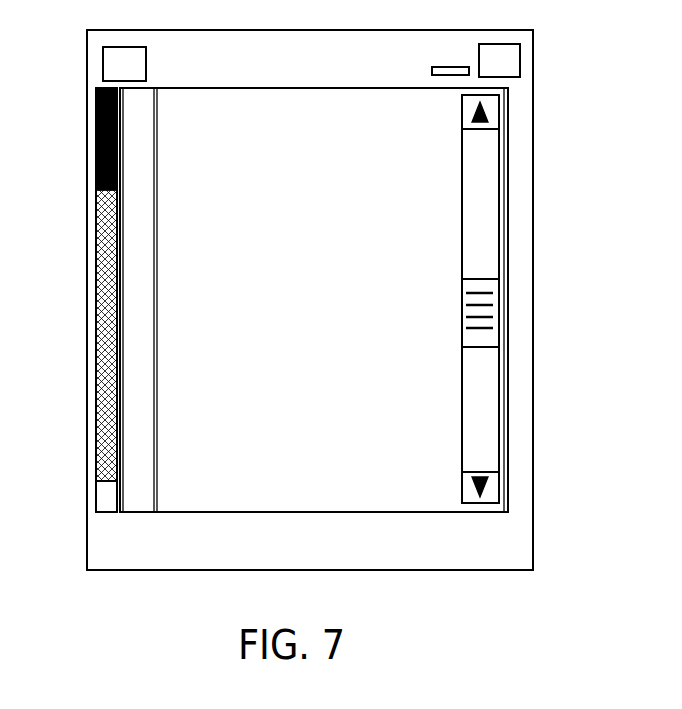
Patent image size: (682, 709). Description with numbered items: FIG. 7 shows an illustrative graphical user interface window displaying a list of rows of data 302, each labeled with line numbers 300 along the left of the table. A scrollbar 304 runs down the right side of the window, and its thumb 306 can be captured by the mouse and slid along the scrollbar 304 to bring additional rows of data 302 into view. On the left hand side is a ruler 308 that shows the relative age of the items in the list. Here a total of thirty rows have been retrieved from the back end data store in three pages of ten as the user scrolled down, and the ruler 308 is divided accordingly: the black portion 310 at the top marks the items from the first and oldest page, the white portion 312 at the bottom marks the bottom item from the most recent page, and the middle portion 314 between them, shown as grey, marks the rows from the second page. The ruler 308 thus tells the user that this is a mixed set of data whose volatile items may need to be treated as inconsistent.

The line numbers 300 is at (122, 387).
The rows of data 302 is at (198, 495).
The scrollbar 304 is at (498, 212).
The thumb 306 is at (490, 338).
The ruler 308 is at (67, 300).
The black portion 310 is at (95, 142).
The white portion 312 is at (96, 497).
The hatched portion of indicator 314 is at (96, 313).